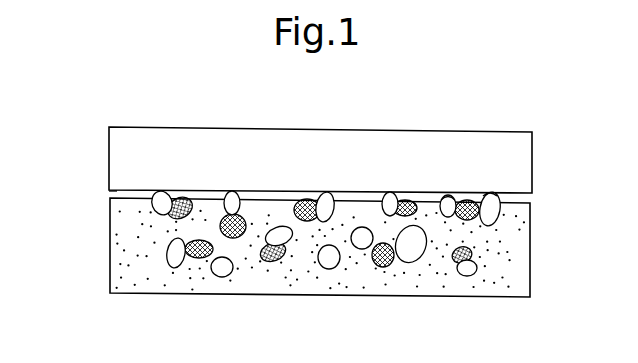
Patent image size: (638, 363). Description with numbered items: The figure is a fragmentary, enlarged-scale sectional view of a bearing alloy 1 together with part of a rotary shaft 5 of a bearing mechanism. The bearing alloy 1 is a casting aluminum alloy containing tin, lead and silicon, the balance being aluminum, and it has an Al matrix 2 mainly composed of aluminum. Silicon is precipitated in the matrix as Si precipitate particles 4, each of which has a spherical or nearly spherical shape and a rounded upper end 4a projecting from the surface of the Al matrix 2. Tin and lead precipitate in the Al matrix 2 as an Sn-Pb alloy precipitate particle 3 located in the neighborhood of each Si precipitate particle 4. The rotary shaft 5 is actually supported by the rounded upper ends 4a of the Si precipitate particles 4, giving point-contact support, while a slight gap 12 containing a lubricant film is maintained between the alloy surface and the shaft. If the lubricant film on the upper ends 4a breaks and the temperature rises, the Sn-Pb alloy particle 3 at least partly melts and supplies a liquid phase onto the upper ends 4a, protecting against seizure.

The bearing alloy 1 is at (108, 248).
The Al matrix 2 is at (470, 288).
The Sn-Pb alloy precipitate particle 3 is at (470, 218).
The Si precipitate particle 4 is at (497, 193).
The rounded upper end 4a is at (448, 195).
The rotary shaft 5 is at (365, 142).
The gap 12 is at (113, 192).